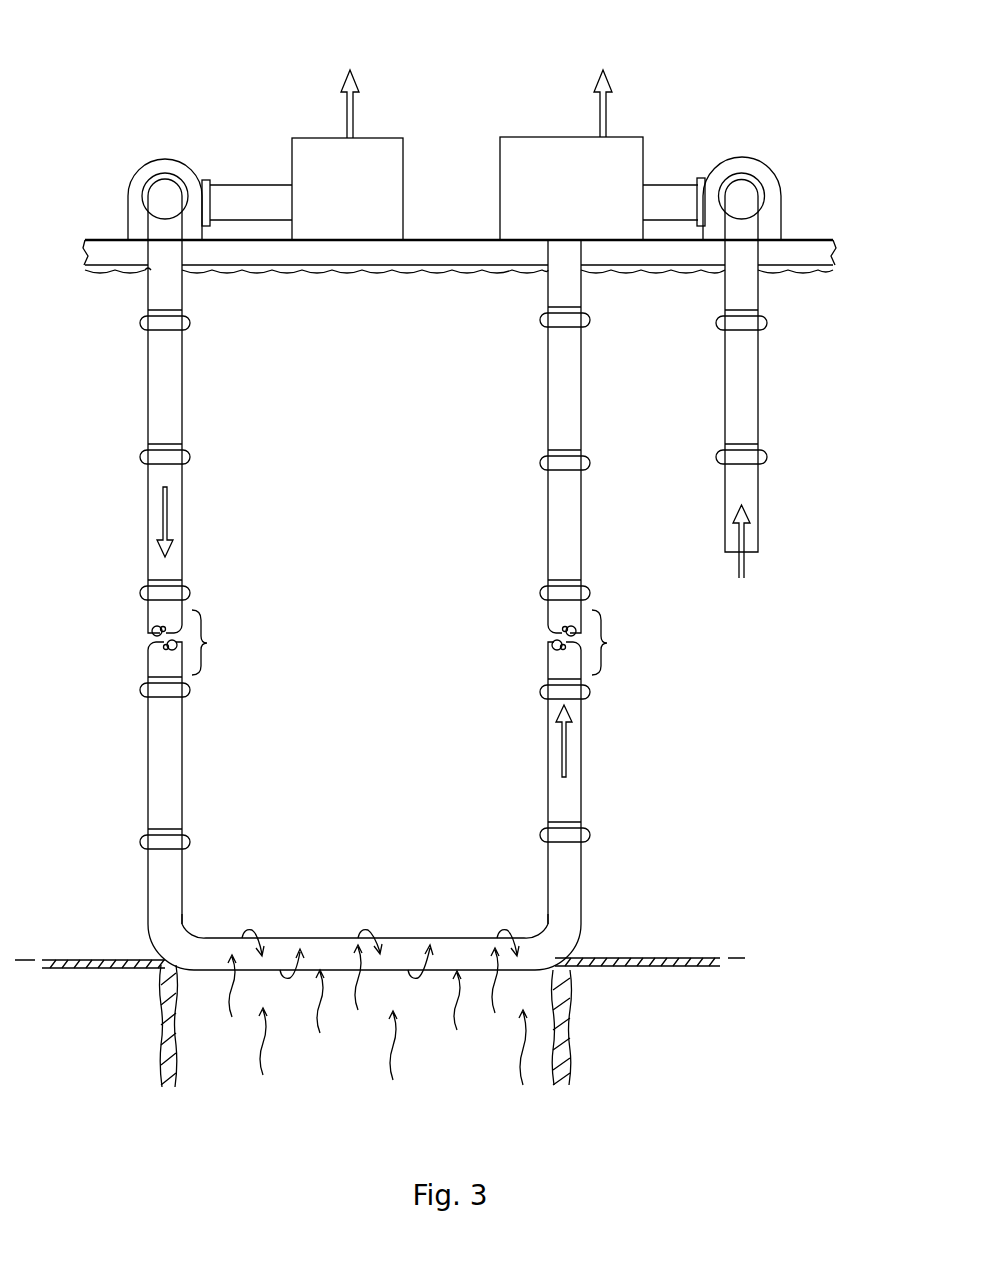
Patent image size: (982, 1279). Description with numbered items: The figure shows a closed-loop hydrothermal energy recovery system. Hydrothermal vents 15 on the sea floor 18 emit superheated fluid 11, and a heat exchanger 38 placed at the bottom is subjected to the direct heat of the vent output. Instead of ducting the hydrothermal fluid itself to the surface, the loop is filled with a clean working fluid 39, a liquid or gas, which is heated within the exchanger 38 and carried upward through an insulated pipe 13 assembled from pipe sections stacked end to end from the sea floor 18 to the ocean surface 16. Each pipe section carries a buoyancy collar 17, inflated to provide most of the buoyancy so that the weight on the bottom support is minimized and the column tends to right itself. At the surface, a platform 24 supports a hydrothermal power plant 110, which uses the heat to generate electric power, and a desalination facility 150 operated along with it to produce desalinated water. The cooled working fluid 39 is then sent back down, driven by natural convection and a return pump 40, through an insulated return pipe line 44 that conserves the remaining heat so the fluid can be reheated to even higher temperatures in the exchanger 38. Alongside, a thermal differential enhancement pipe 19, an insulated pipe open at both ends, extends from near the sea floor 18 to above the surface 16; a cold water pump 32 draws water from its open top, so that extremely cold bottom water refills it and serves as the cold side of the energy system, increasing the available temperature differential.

The superheated fluid 11 is at (377, 1024).
The insulated pipe 13 is at (600, 582).
The hydrothermal vents 15 is at (364, 1026).
The ocean surface 16 is at (459, 315).
The buoyancy collar 17 is at (199, 458).
The sea floor 18 is at (380, 1003).
The thermal differential enhancement pipe 19 is at (766, 387).
The platform 24 is at (492, 263).
The cold water pump 32 is at (757, 165).
The heat exchanger 38 is at (364, 917).
The working fluid 39 is at (400, 632).
The return pump 40 is at (138, 174).
The return pipe line 44 is at (191, 560).
The hydrothermal power plant 110 is at (572, 131).
The desalination facility 150 is at (358, 131).